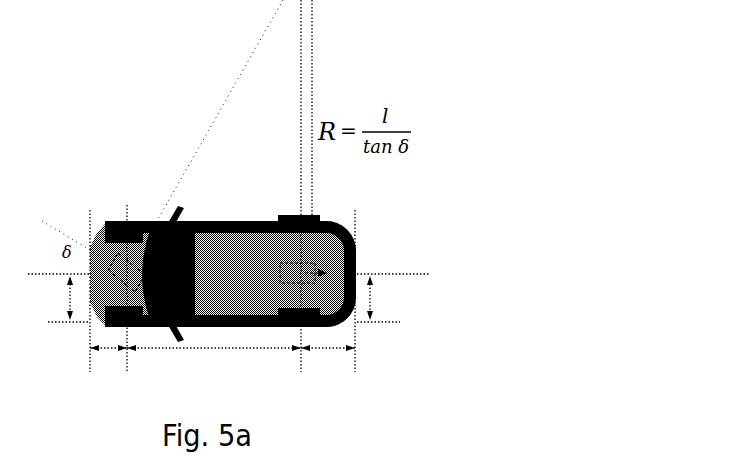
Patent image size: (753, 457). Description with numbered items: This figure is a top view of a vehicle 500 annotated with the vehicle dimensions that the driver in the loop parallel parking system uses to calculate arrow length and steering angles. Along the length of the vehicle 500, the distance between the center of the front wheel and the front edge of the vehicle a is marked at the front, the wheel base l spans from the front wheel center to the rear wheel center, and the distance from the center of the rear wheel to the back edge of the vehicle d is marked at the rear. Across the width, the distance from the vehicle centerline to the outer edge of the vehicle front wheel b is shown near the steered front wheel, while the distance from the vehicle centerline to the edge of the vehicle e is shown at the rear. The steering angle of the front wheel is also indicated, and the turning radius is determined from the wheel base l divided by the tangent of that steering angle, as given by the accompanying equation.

The vehicle 500 is at (326, 216).
The distance between the center of the front wheel and the front edge of the vehicle a is at (108, 363).
The wheel base l is at (214, 363).
The distance from the center of the rear wheel to the back edge of the vehicle d is at (328, 360).
The distance from the vehicle centerline to the outer edge of the vehicle front whee b is at (59, 298).
The distance from the vehicle centerline to the edge of the vehicle e is at (393, 298).